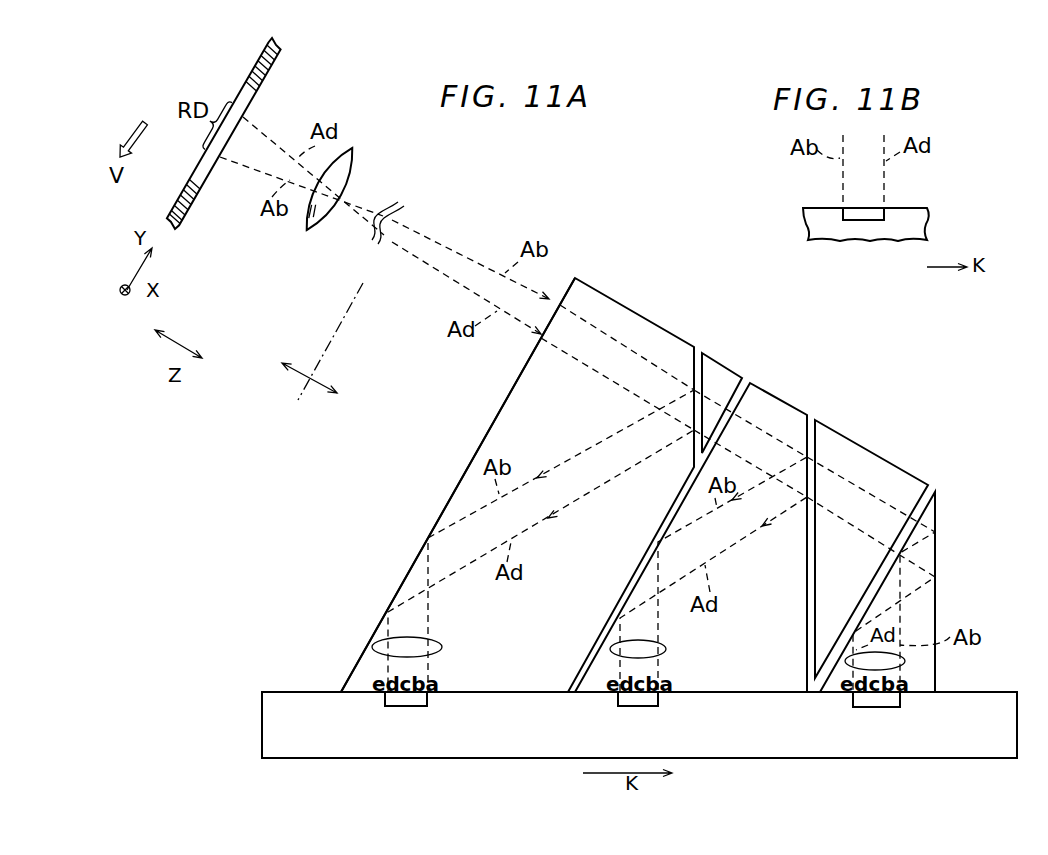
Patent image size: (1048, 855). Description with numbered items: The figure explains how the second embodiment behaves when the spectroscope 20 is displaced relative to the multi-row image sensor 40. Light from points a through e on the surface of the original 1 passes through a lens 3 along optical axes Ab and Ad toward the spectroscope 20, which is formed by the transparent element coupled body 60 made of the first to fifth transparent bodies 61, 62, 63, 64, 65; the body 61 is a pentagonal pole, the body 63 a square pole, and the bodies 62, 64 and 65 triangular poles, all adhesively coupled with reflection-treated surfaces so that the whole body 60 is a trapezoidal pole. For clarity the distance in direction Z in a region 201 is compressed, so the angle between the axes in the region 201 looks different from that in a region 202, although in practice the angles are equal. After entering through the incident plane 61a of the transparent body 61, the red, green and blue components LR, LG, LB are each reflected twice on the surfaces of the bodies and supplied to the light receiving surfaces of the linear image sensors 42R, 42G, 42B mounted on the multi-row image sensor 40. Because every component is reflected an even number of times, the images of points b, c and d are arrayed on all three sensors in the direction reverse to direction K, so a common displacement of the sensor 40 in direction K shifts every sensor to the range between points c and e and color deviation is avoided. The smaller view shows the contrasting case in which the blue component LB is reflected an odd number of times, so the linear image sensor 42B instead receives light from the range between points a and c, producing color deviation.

In FIG. 11A, the original 1 is at (281, 52).
In FIG. 11A, the imaging lens 3 is at (353, 151).
In FIG. 11A, the spectroscope 20 is at (653, 485).
In FIG. 11A, the transparent element coupled body 60 is at (653, 485).
In FIG. 11A, the first transparent body 61 is at (567, 413).
In FIG. 11A, the incident plane 61a is at (506, 399).
In FIG. 11A, the second transparent body 62 is at (732, 395).
In FIG. 11A, the third transparent body 63 is at (763, 601).
In FIG. 11A, the fourth transparent body 64 is at (890, 490).
In FIG. 11A, the fifth transparent body 65 is at (927, 636).
In FIG. 11A, the multi-row image sensor 40 is at (1008, 686).
In FIG. 11B, the multi-row image sensor 40 is at (972, 198).
In FIG. 11A, the linear image sensor 42R is at (427, 700).
In FIG. 11A, the linear image sensor 42G is at (658, 700).
In FIG. 11A, the linear image sensor 42B is at (900, 702).
In FIG. 11B, the linear image sensor 42B is at (868, 220).
In FIG. 11A, the region 201 is at (290, 365).
In FIG. 11A, the region 202 is at (358, 393).
In FIG. 11A, the red light component LR is at (425, 644).
In FIG. 11A, the green light component LG is at (658, 651).
In FIG. 11A, the blue light component LB is at (905, 661).